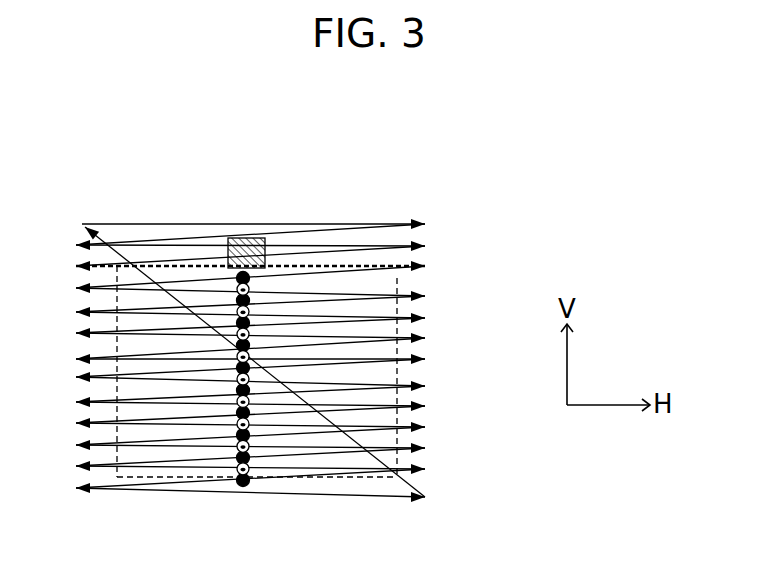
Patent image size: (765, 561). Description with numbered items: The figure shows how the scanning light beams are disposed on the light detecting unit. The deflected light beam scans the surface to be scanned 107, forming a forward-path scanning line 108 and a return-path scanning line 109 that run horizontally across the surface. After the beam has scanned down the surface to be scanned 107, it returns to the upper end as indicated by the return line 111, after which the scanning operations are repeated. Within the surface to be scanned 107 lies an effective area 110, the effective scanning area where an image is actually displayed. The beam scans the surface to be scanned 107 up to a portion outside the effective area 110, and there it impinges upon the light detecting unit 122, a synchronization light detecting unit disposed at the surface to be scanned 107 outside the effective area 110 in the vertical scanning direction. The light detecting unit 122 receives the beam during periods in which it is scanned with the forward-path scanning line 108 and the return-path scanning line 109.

The surface to be scanned 107 is at (429, 204).
The forward-path scanning line 108 is at (203, 246).
The return-path scanning line 109 is at (302, 253).
The effective area 110 is at (397, 281).
The return line 111 is at (412, 486).
The light detecting unit 122 is at (252, 234).